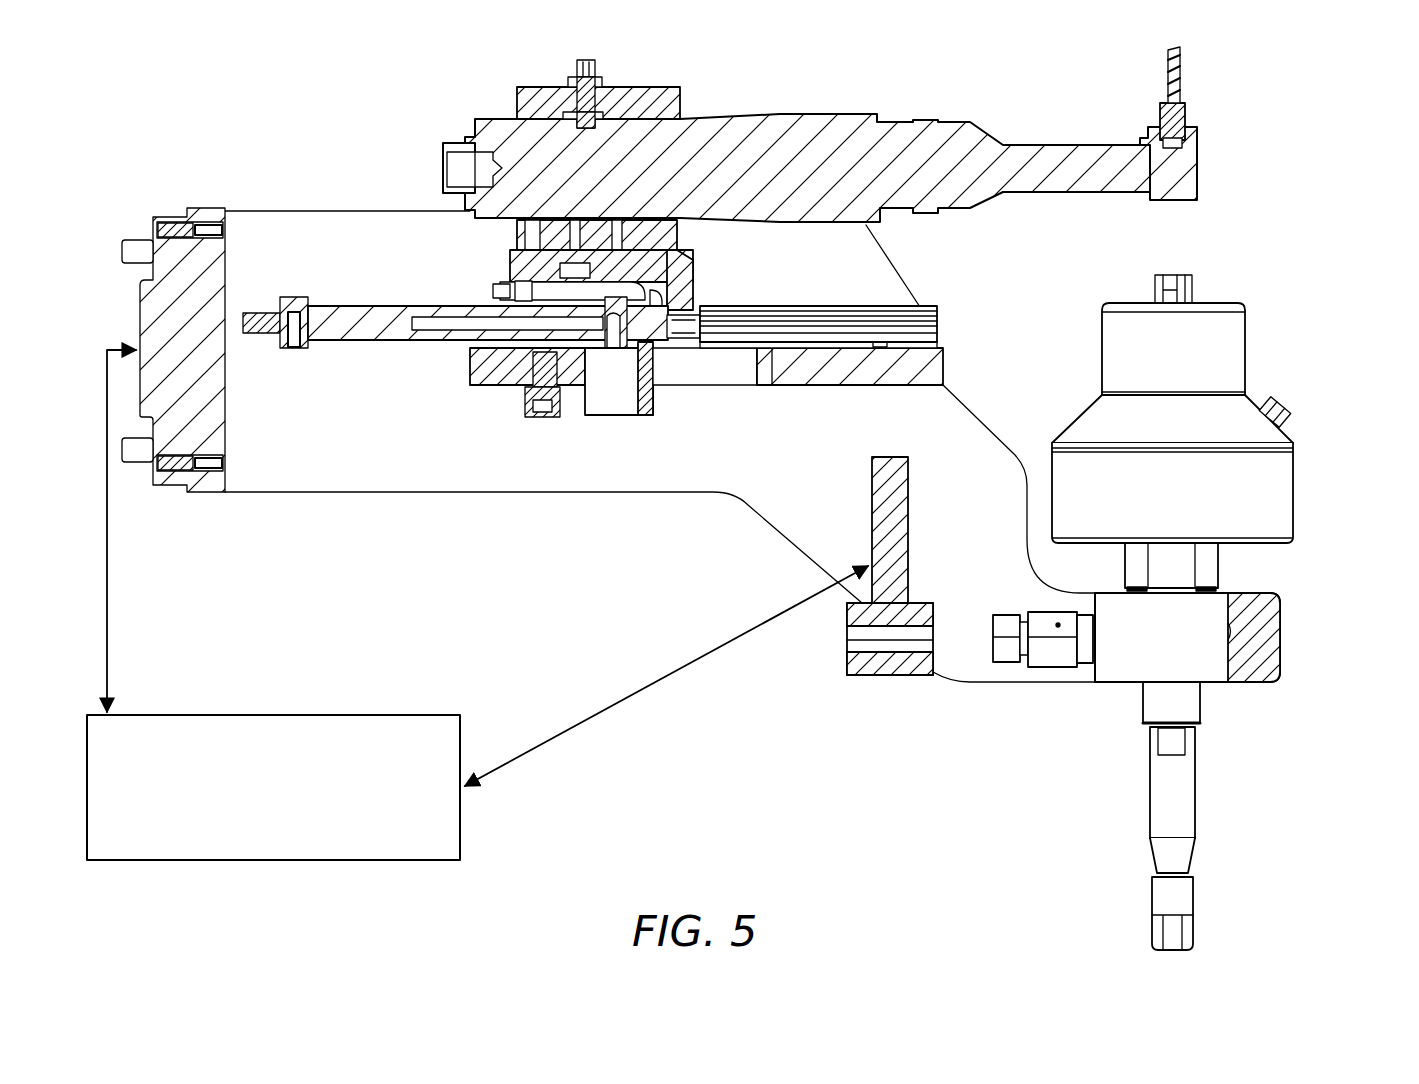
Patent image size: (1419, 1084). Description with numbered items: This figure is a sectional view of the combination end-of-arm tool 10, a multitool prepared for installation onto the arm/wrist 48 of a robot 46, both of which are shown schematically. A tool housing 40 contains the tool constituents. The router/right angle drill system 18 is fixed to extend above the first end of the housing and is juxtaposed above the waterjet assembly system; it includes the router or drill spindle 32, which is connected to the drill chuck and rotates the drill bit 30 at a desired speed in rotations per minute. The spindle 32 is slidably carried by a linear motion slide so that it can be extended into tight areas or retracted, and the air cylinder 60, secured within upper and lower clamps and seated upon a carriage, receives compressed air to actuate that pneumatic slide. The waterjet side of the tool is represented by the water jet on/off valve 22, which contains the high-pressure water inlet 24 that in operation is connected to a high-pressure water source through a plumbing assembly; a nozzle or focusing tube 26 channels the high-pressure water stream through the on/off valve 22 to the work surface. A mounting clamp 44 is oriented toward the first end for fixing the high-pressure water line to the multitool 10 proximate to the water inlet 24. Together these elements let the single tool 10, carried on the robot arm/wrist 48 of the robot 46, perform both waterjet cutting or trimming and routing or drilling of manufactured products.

The combination end-of-arm tool 10 is at (1360, 237).
The router/right angle drill system 18 is at (958, 118).
The water jet on/off valve 22 is at (1292, 480).
The high-pressure water inlet 24 is at (993, 666).
The nozzle or focusing tube 26 is at (1212, 817).
The drill bit 30 is at (1207, 82).
The router or drill spindle 32 is at (852, 112).
The tool housing 40 is at (118, 286).
The mounting clamp 44 is at (868, 495).
The robot 46 is at (288, 806).
The robot arm/wrist 48 is at (1290, 640).
The air cylinder 60 is at (377, 342).